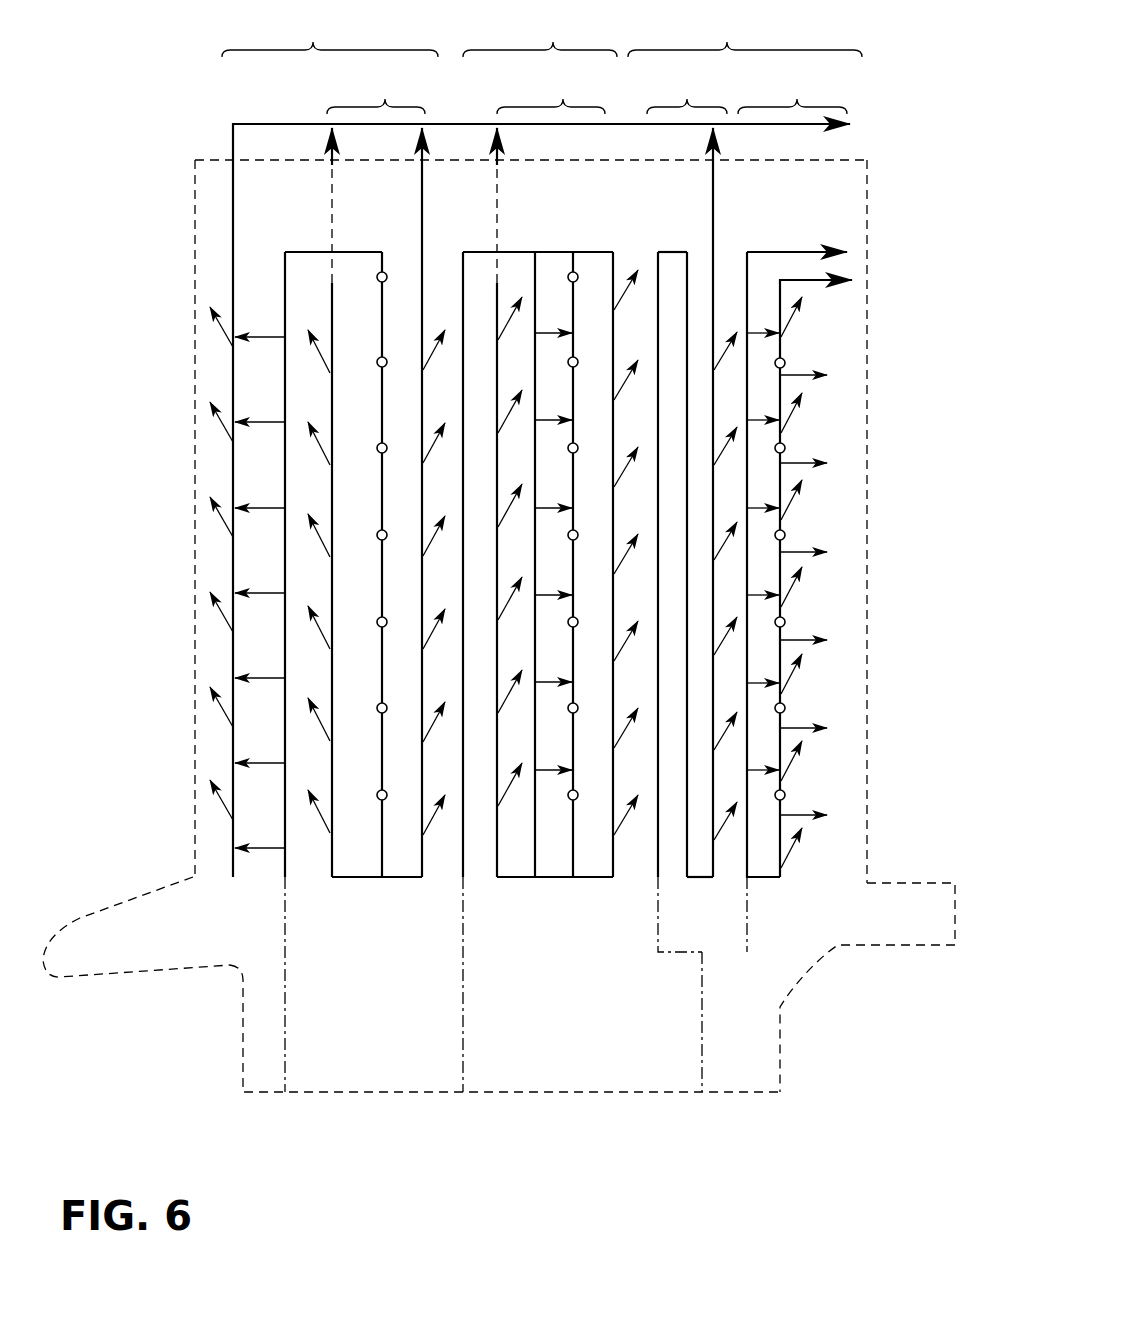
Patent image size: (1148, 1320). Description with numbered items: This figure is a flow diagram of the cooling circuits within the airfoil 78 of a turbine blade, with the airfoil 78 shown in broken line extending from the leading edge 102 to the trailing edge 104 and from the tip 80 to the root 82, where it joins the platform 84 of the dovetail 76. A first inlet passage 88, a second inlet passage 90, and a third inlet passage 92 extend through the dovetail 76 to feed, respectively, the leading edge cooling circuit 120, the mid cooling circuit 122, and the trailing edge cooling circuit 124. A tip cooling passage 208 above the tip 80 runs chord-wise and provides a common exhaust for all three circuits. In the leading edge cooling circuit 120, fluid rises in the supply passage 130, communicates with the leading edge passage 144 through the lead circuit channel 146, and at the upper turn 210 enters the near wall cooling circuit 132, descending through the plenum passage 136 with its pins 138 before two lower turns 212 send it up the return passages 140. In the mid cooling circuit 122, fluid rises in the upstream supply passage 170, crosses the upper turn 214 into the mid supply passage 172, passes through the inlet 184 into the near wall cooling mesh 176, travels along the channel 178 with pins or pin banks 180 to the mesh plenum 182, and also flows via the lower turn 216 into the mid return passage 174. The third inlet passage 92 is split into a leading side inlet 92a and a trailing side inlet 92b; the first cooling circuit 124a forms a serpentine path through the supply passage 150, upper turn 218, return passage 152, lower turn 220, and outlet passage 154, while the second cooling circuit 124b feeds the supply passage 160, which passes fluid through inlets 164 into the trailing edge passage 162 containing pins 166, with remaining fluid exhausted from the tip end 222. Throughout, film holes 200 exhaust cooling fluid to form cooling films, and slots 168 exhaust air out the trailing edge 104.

The dovetail 76 is at (241, 1043).
The airfoil 78 is at (190, 190).
The tip 80 is at (222, 156).
The root 82 is at (870, 862).
The platform 84 is at (80, 916).
The first inlet passage 88 is at (285, 1047).
The second inlet passage 90 is at (463, 1047).
The third inlet passage 92 is at (702, 1047).
The leading side inlet 92a is at (660, 937).
The trailing side inlet 92b is at (748, 932).
The leading edge 102 is at (192, 277).
The trailing edge 104 is at (867, 220).
The leading edge cooling circuit 120 is at (330, 34).
The mid cooling circuit 122 is at (540, 34).
The trailing edge cooling circuit 124 is at (745, 34).
The first cooling circuit 124a is at (687, 91).
The second cooling circuit 124b is at (792, 91).
The supply passage 130 is at (285, 838).
The near wall cooling circuit 132 is at (376, 91).
The plenum passage 136 is at (380, 845).
The pins 138 is at (380, 255).
The return passages 140 is at (303, 300).
The leading edge passage 144 is at (233, 848).
The lead circuit channel 146 is at (265, 500).
The supply passage 150 is at (660, 262).
The return passage 152 is at (683, 270).
The outlet passage 154 is at (713, 857).
The supply passage 160 is at (747, 848).
The trailing edge passage 162 is at (783, 858).
The inlets 164 is at (740, 300).
The pins 166 is at (785, 448).
The slots 168 is at (800, 380).
The upstream supply passage 170 is at (465, 850).
The mid supply passage 172 is at (537, 845).
The mid return passage 174 is at (498, 855).
The near wall cooling mesh 176 is at (551, 91).
The channel 178 is at (573, 850).
The pins or pin banks 180 is at (576, 268).
The mesh plenum 182 is at (614, 855).
The inlet 184 is at (545, 332).
The film holes 200 is at (427, 345).
The tip cooling passage 208 is at (257, 124).
The upper turn 210 is at (305, 252).
The lower turns 212 is at (345, 878).
The upper turn 214 is at (523, 252).
The lower turn 216 is at (510, 878).
The upper turn 218 is at (668, 252).
The lower turn 220 is at (698, 878).
The tip end 222 is at (788, 252).